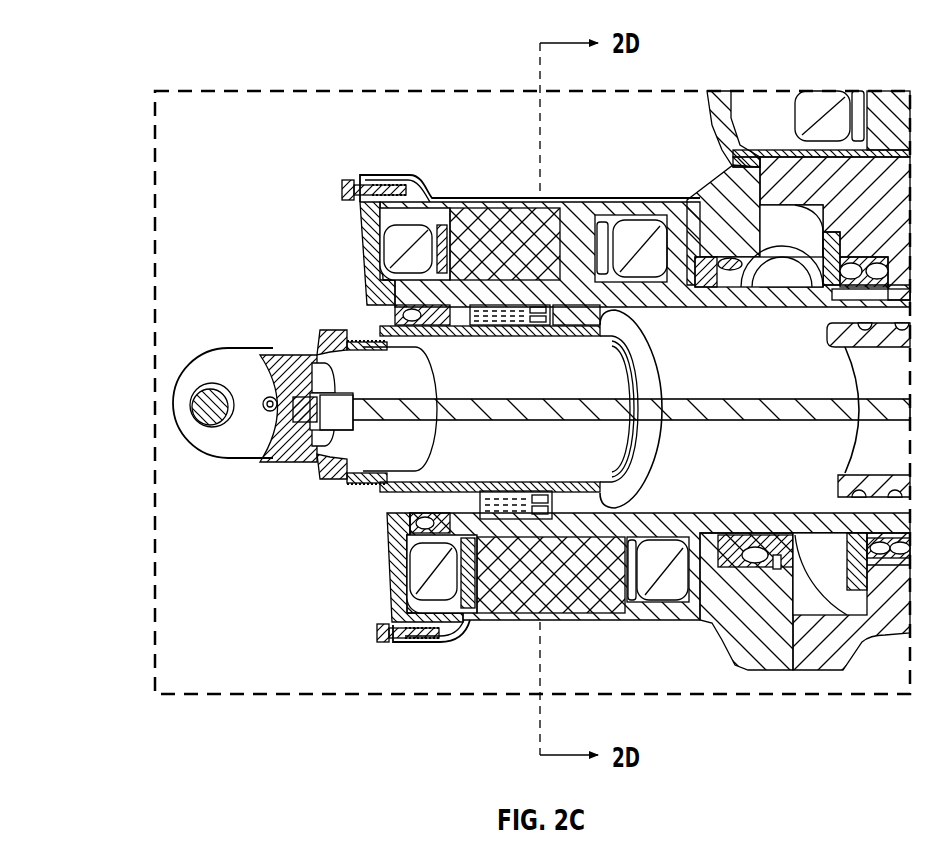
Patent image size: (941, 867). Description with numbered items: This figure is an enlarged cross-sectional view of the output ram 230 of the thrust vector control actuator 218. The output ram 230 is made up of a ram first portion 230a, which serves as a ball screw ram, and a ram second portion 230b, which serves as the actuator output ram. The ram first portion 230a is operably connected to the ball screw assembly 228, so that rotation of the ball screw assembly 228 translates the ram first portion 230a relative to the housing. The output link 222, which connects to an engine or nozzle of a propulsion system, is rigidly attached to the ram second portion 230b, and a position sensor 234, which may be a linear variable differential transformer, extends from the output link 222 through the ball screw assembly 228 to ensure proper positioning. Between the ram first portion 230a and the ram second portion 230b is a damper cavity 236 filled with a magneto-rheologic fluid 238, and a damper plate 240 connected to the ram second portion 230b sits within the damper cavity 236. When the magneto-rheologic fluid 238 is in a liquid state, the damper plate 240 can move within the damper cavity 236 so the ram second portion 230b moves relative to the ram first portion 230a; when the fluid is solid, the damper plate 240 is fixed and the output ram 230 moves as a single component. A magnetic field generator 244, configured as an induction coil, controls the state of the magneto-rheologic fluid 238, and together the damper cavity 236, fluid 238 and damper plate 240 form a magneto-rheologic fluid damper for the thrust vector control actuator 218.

The thrust vector control actuator 218 is at (134, 58).
The output link 222 is at (205, 363).
The ball screw assembly 228 is at (867, 378).
The output ram 230 is at (590, 300).
The ram first portion 230a is at (803, 523).
The ram second portion 230b is at (645, 342).
The position sensor 234 is at (712, 420).
The damper cavity 236 is at (484, 316).
The magneto-rheologic fluid 238 is at (520, 500).
The damper plate 240 is at (543, 515).
The magnetic field generator 244 is at (553, 220).